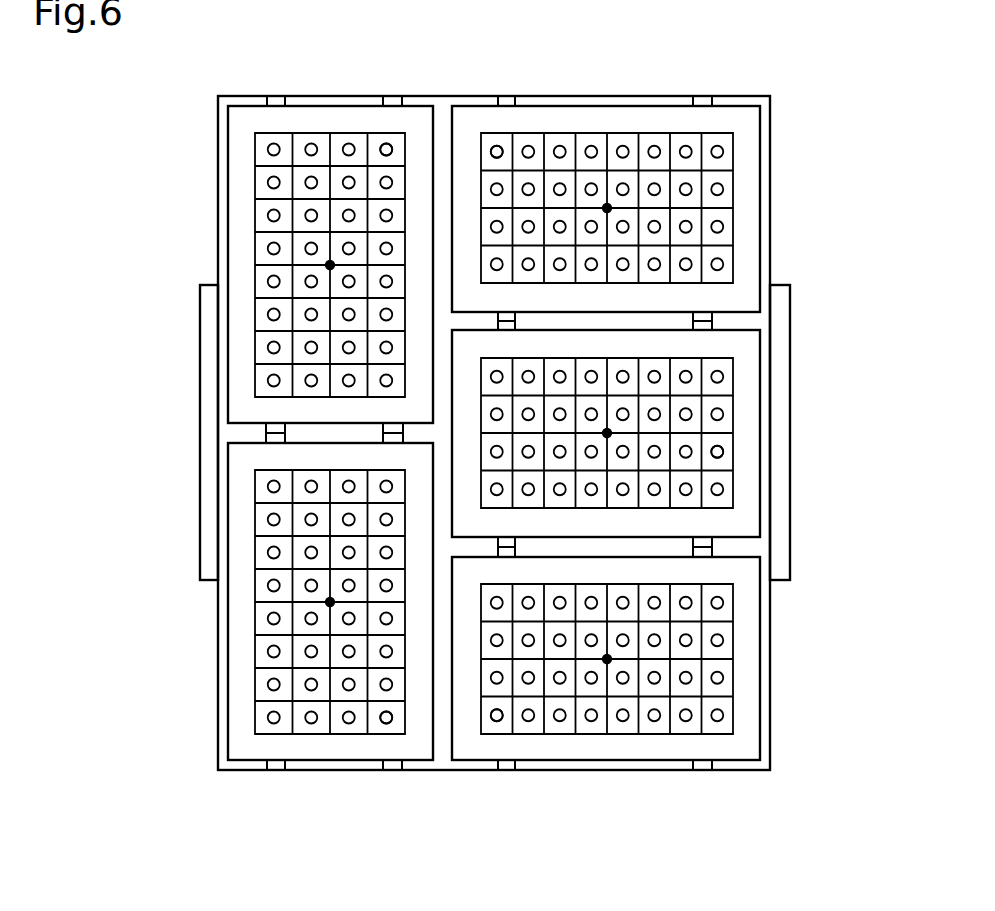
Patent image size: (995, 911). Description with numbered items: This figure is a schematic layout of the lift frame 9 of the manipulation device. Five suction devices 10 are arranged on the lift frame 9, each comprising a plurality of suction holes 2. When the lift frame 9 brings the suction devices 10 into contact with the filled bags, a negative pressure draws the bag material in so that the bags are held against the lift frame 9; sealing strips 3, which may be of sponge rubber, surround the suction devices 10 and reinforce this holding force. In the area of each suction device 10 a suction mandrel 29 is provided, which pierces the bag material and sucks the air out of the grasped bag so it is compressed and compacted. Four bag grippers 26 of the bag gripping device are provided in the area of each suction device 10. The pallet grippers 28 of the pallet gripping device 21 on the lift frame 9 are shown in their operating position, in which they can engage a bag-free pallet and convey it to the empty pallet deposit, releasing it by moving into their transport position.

The lift frame 9 is at (177, 127).
The sealing strip 3 is at (766, 140).
The suction device 10 is at (693, 150).
The suction hole 2 is at (495, 145).
The suction mandrel 29 is at (328, 264).
The bag gripper 26 is at (395, 97).
The pallet gripping device 21 is at (796, 291).
The pallet gripper 28 is at (208, 403).